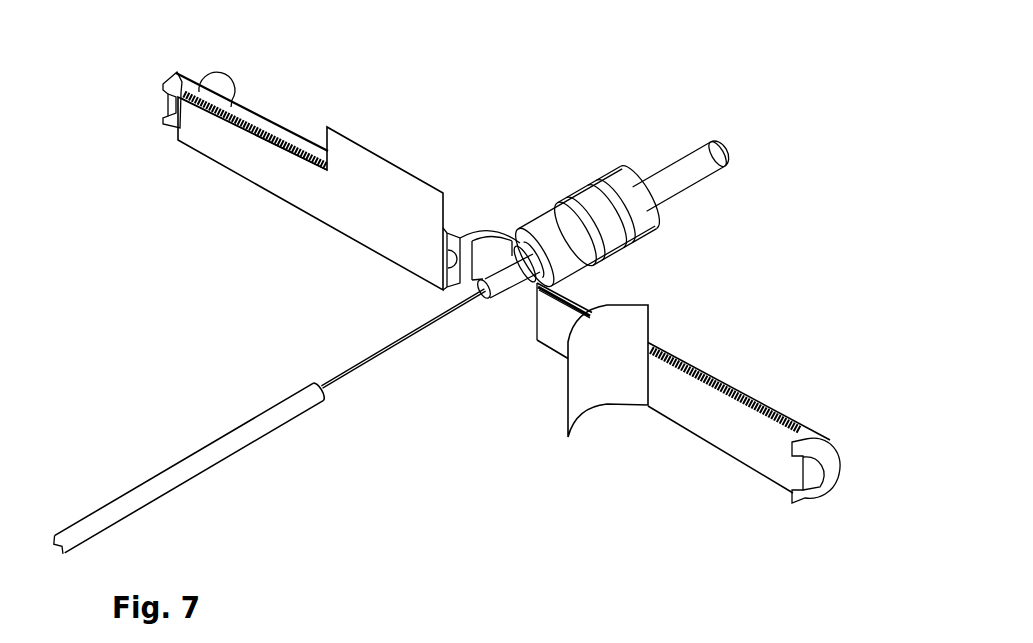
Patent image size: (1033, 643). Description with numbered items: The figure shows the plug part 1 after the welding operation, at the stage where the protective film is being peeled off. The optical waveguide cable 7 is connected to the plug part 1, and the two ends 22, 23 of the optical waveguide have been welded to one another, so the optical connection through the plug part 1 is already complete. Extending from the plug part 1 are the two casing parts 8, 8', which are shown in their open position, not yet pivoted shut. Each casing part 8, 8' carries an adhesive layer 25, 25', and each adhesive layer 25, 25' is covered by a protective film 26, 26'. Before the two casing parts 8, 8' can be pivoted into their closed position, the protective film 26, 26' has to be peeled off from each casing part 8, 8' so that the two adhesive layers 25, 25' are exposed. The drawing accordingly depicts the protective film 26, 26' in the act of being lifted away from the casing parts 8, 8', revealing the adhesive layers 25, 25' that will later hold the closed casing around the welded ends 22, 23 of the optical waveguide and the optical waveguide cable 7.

The plug part 1 is at (520, 93).
The optical waveguide cable 7 is at (236, 447).
The casing part 8 is at (688, 393).
The casing part 8' is at (258, 105).
The end of the optical waveguide 22 is at (403, 391).
The end of the optical waveguide 23 is at (402, 341).
The adhesive layer 25 is at (542, 402).
The adhesive layer 25' is at (225, 171).
The protective film 26 is at (608, 411).
The protective film 26' is at (319, 195).